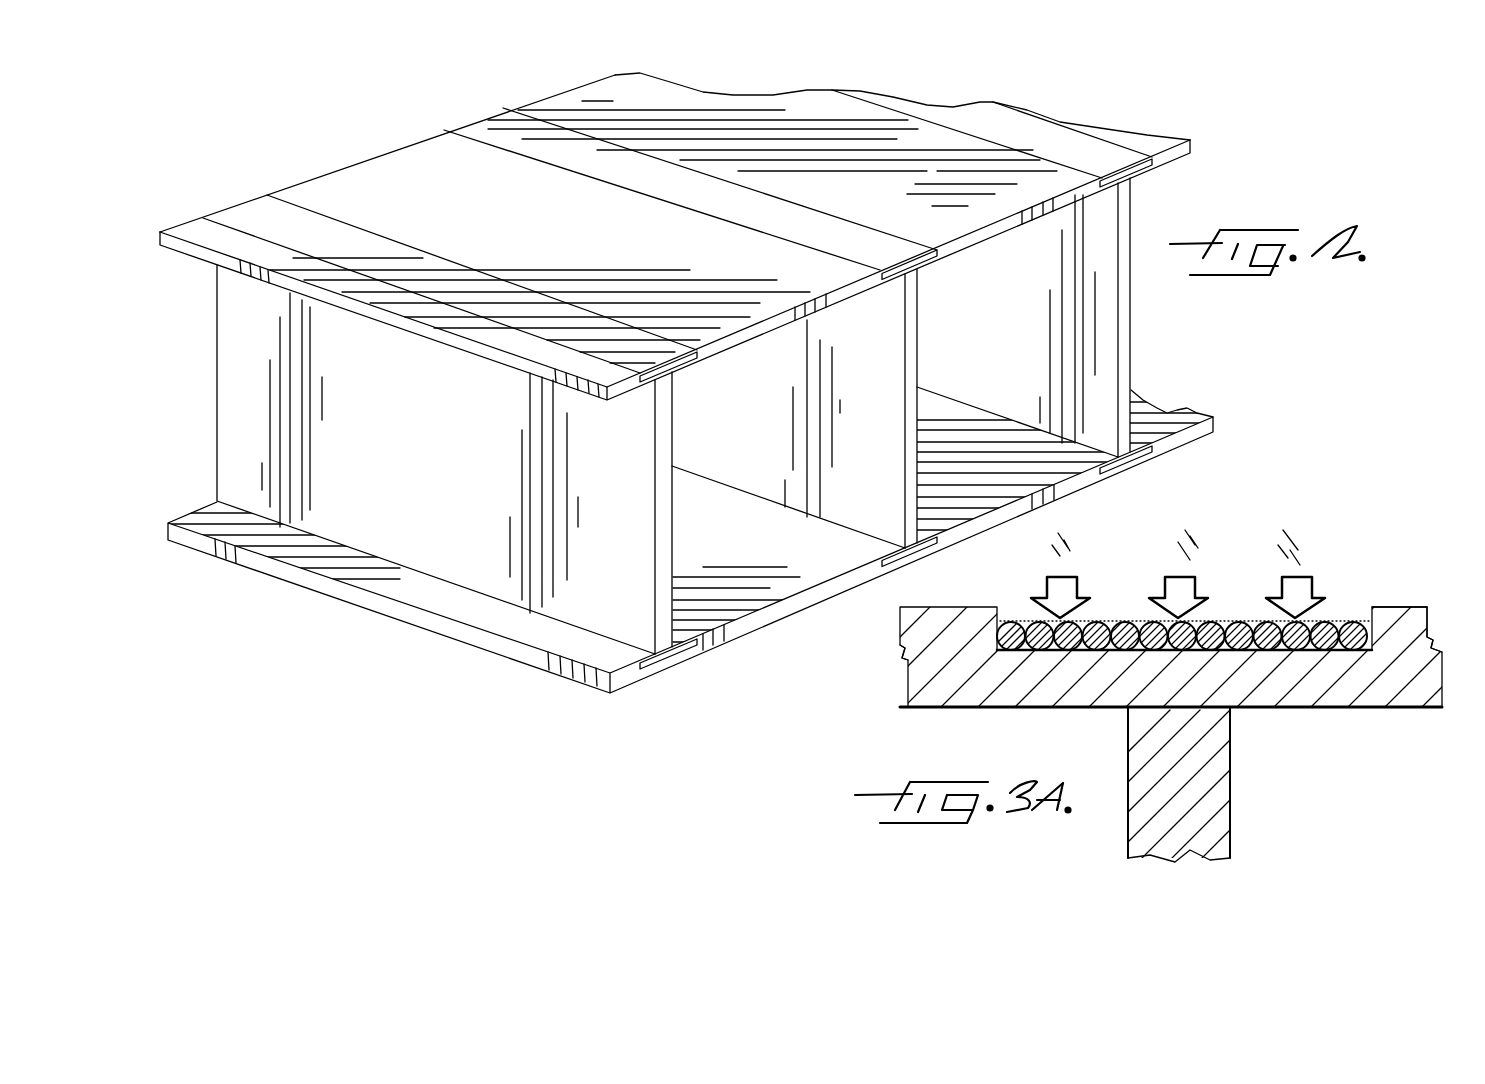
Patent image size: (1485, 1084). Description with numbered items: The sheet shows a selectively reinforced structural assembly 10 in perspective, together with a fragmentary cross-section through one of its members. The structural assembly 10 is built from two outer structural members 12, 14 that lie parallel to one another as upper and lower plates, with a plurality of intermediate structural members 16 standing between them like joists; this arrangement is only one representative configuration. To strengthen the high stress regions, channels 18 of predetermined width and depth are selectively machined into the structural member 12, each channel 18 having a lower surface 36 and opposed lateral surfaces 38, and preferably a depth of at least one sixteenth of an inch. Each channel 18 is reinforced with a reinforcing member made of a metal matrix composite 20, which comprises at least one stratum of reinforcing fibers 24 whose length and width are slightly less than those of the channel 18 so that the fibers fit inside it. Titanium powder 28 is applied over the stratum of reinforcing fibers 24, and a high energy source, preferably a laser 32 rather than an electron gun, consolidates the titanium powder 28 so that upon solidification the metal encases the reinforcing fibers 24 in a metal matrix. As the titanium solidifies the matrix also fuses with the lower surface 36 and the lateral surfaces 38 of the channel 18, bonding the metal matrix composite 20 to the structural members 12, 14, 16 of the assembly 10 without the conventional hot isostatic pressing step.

In FIG. 2, the selectively reinforced structural assembly 10 is at (1030, 92).
In FIG. 2, the outer structural member 12 is at (1105, 132).
In FIG. 3A, the outer structural member 12 is at (1443, 707).
In FIG. 2, the outer structural member 14 is at (595, 680).
In FIG. 2, the intermediate structural member 16 is at (1127, 330).
In FIG. 3A, the intermediate structural member 16 is at (1232, 775).
In FIG. 2, the channel 18 is at (479, 131).
In FIG. 3A, the channel 18 is at (1107, 603).
In FIG. 2, the metal matrix composite 20 is at (1132, 176).
In FIG. 3A, the reinforcing fibers 24 is at (1325, 630).
In FIG. 3A, the titanium powder 28 is at (1045, 553).
In FIG. 3A, the laser 32 is at (1397, 613).
In FIG. 3A, the lower surface 36 is at (1325, 652).
In FIG. 3A, the lateral surfaces 38 is at (1428, 616).